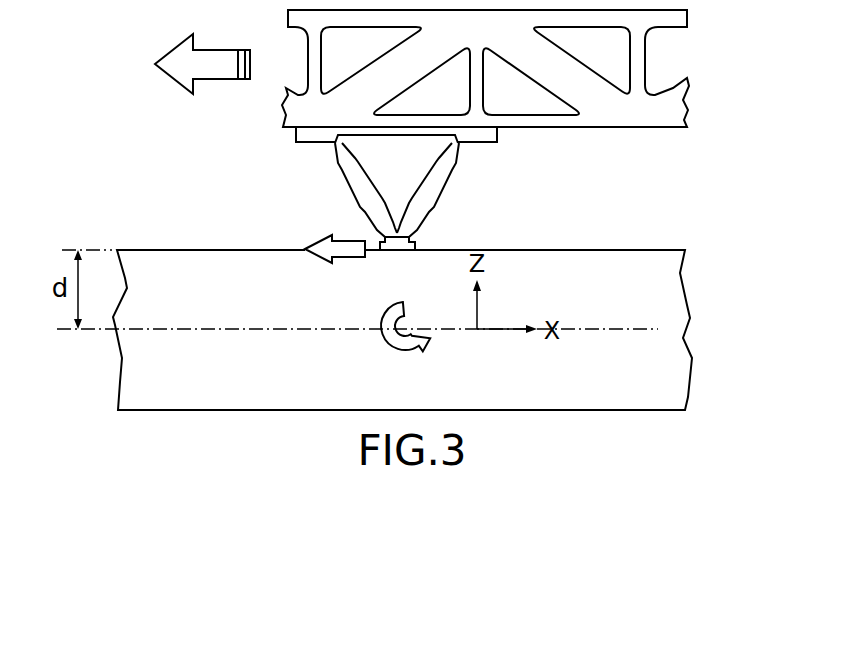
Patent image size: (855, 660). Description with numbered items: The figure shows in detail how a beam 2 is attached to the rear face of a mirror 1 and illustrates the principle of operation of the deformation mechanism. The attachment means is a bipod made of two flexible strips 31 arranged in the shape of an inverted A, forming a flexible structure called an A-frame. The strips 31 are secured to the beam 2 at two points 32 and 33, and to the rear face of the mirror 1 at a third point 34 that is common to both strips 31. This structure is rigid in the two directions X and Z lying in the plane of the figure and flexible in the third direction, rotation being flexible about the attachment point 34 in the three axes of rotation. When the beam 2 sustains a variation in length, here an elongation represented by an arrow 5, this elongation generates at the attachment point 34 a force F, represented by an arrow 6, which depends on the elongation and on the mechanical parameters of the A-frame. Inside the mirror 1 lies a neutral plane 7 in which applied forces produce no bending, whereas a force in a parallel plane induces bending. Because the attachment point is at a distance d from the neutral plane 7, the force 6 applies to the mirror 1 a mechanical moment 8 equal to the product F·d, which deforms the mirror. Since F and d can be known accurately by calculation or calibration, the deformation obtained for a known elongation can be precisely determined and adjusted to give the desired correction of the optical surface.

The mirror 1 is at (660, 303).
The beam 2 is at (673, 103).
The arrow representing elongation 5 is at (202, 53).
The arrow representing force F 6 is at (335, 235).
The neutral plane 7 is at (268, 329).
The mechanical moment 8 is at (405, 346).
The flexible strips 31 is at (396, 188).
The first attachment point to the beam 32 is at (333, 142).
The second attachment point to the beam 33 is at (458, 147).
The third attachment point to the mirror 34 is at (398, 251).